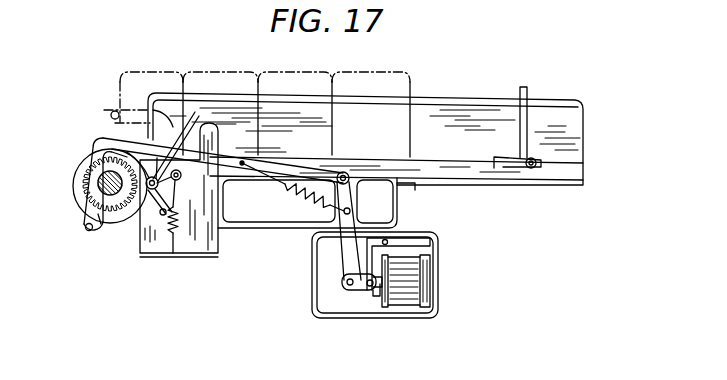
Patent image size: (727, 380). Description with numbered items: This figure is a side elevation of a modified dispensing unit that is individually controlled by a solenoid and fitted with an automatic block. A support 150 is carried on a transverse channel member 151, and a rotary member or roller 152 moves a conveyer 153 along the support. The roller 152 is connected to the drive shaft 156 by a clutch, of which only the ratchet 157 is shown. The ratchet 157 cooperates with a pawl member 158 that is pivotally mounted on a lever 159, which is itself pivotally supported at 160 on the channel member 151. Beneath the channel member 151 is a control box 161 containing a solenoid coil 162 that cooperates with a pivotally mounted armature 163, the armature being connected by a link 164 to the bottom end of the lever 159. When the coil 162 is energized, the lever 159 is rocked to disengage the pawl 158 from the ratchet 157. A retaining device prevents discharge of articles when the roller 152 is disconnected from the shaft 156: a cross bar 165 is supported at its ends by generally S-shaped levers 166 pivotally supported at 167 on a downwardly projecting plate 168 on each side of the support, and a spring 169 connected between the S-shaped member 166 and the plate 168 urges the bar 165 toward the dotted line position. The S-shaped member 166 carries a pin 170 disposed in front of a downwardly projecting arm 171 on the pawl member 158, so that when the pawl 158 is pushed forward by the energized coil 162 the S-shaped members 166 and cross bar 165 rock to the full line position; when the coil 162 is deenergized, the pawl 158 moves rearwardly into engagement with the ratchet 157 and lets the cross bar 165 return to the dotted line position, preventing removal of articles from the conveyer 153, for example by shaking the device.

The support 150 is at (525, 183).
The transverse channel member 151 is at (398, 209).
The rotary member or roller 152 is at (118, 223).
The conveyer 153 is at (440, 158).
The drive shaft 156 is at (100, 192).
The ratchet 157 is at (101, 224).
The pawl member 158 is at (212, 158).
The lever 159 is at (348, 176).
The pivot 160 is at (344, 213).
The control box 161 is at (440, 260).
The solenoid coil 162 is at (408, 304).
The armature 163 is at (367, 262).
The link 164 is at (361, 291).
The cross bar 165 is at (112, 113).
The S-shaped lever 166 is at (92, 163).
The pivot 167 is at (181, 175).
The downwardly projecting plate 168 is at (192, 250).
The spring 169 is at (178, 221).
The pin 170 is at (145, 170).
The downwardly projecting arm 171 is at (186, 142).